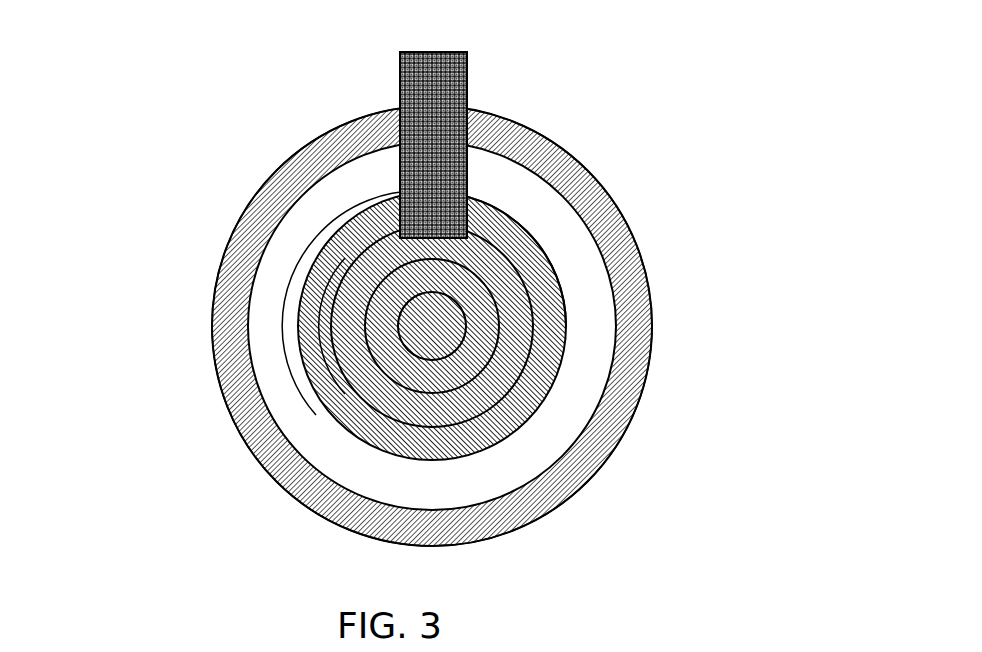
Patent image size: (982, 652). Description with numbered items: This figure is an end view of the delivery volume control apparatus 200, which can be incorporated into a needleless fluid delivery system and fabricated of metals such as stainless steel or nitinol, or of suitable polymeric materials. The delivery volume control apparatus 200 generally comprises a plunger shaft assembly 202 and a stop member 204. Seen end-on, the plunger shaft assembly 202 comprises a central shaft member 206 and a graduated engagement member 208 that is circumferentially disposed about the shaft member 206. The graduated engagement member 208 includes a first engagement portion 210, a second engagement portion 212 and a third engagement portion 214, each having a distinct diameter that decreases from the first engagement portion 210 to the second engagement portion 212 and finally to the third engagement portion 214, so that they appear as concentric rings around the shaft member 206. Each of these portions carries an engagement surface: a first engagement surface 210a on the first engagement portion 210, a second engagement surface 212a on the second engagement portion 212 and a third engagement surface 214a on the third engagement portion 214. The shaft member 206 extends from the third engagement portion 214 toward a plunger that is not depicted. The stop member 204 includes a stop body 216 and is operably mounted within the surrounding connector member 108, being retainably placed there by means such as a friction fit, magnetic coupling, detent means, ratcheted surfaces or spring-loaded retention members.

The connector member 108 is at (587, 183).
The delivery volume control apparatus 200 is at (715, 255).
The plunger shaft assembly 202 is at (521, 393).
The stop member 204 is at (468, 67).
The shaft member 206 is at (447, 338).
The graduated engagement member 208 is at (553, 257).
The first engagement portion 210 is at (305, 372).
The first engagement surface 210a is at (305, 307).
The second engagement portion 212 is at (353, 385).
The second engagement surface 212a is at (352, 292).
The third engagement portion 214 is at (430, 383).
The third engagement surface 214a is at (362, 227).
The stop body 216 is at (443, 165).